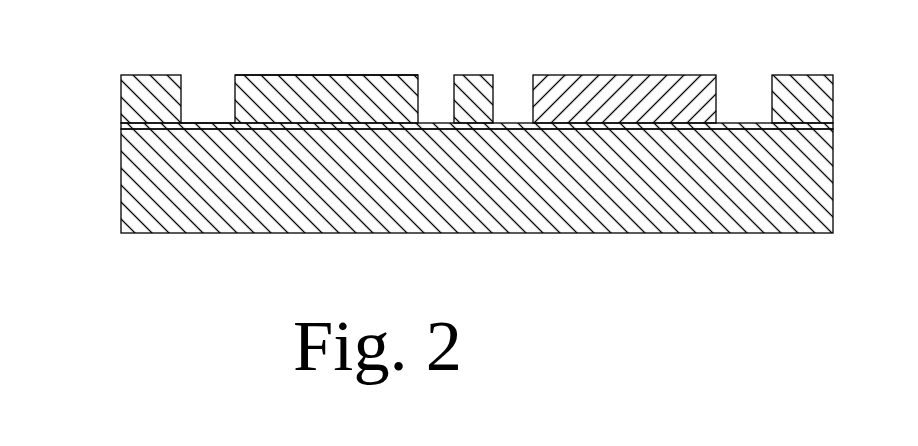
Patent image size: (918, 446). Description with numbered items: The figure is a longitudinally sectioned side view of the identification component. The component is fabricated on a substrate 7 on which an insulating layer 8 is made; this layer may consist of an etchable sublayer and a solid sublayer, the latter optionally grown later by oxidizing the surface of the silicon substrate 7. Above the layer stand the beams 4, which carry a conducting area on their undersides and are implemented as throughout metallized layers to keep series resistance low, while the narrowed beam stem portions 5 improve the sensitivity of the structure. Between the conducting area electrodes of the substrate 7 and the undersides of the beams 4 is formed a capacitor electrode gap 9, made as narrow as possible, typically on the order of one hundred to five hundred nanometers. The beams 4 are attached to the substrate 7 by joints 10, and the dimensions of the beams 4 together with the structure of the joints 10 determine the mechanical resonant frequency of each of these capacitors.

The beam 4 is at (420, 78).
The beam stem portion 5 is at (332, 51).
The substrate 7 is at (120, 173).
The insulating layer 8 is at (120, 123).
The capacitor electrode gap 9 is at (392, 127).
The joint 10 is at (268, 122).